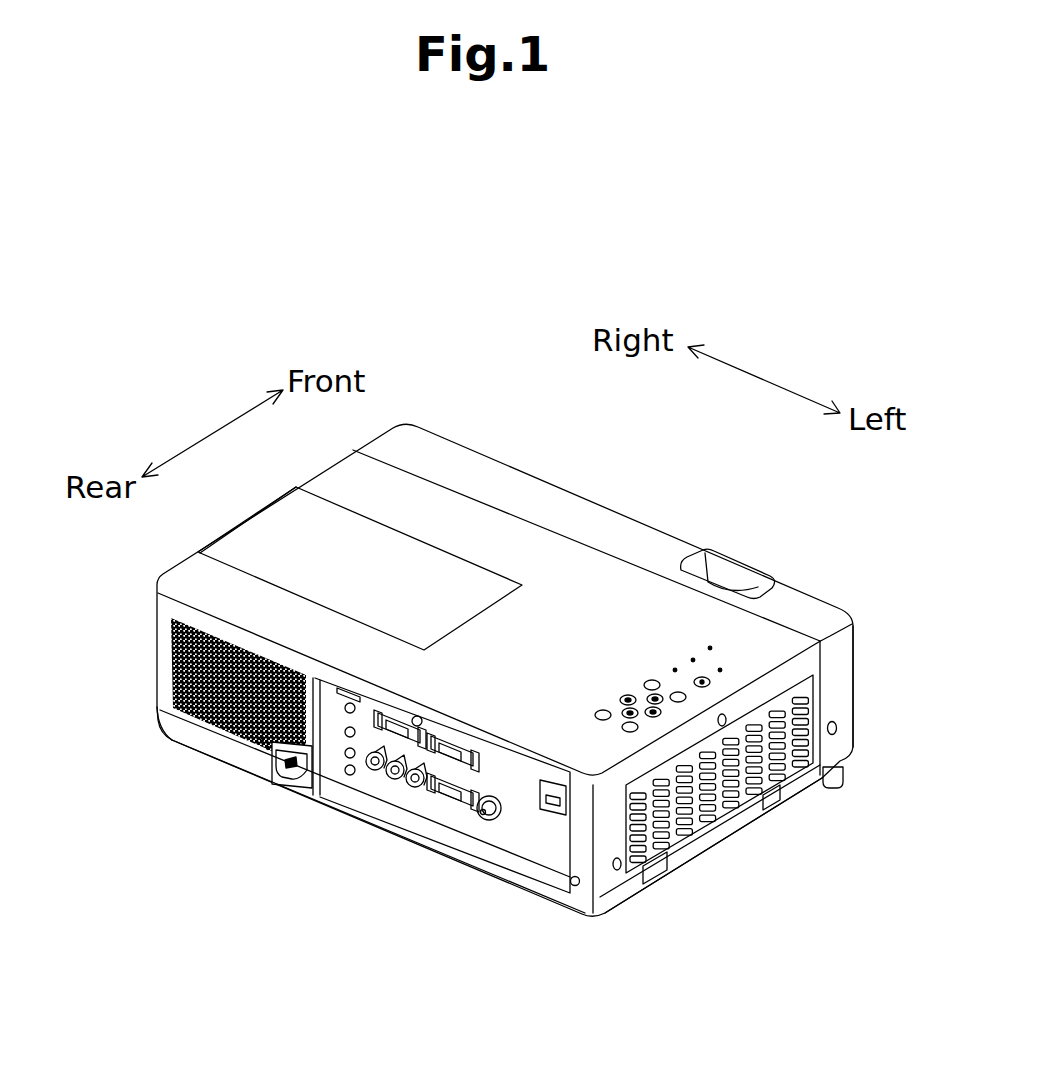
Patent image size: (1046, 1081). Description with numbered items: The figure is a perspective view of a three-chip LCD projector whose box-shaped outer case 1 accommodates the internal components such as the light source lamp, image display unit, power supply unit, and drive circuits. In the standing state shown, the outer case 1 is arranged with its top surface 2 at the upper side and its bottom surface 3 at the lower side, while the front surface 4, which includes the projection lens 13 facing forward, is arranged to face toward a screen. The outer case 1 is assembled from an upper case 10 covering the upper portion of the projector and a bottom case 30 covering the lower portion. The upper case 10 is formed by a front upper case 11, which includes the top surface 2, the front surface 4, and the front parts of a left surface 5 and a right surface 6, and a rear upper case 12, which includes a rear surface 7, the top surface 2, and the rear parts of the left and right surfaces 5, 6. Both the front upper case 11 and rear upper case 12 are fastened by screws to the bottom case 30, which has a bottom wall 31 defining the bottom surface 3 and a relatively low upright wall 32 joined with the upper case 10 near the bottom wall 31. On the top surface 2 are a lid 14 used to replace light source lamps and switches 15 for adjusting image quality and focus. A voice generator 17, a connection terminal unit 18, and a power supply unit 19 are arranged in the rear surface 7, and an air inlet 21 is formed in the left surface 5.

The outer case 1 is at (493, 432).
The top surface 2 is at (365, 462).
The bottom surface 3 is at (492, 882).
The front surface 4 is at (807, 574).
The left surface 5 is at (745, 829).
The right surface 6 is at (257, 505).
The rear surface 7 is at (157, 653).
The upper case 10 is at (697, 453).
The front upper case 11 is at (645, 533).
The rear upper case 12 is at (555, 545).
The projection lens 13 is at (738, 585).
The lid 14 is at (307, 515).
The switches 15 is at (647, 660).
The voice generator 17 is at (157, 703).
The connection terminal unit 18 is at (373, 782).
The power supply unit 19 is at (288, 790).
The air inlet 21 is at (697, 817).
The bottom case 30 is at (460, 905).
The bottom wall 31 is at (440, 856).
The upright wall 32 is at (397, 832).